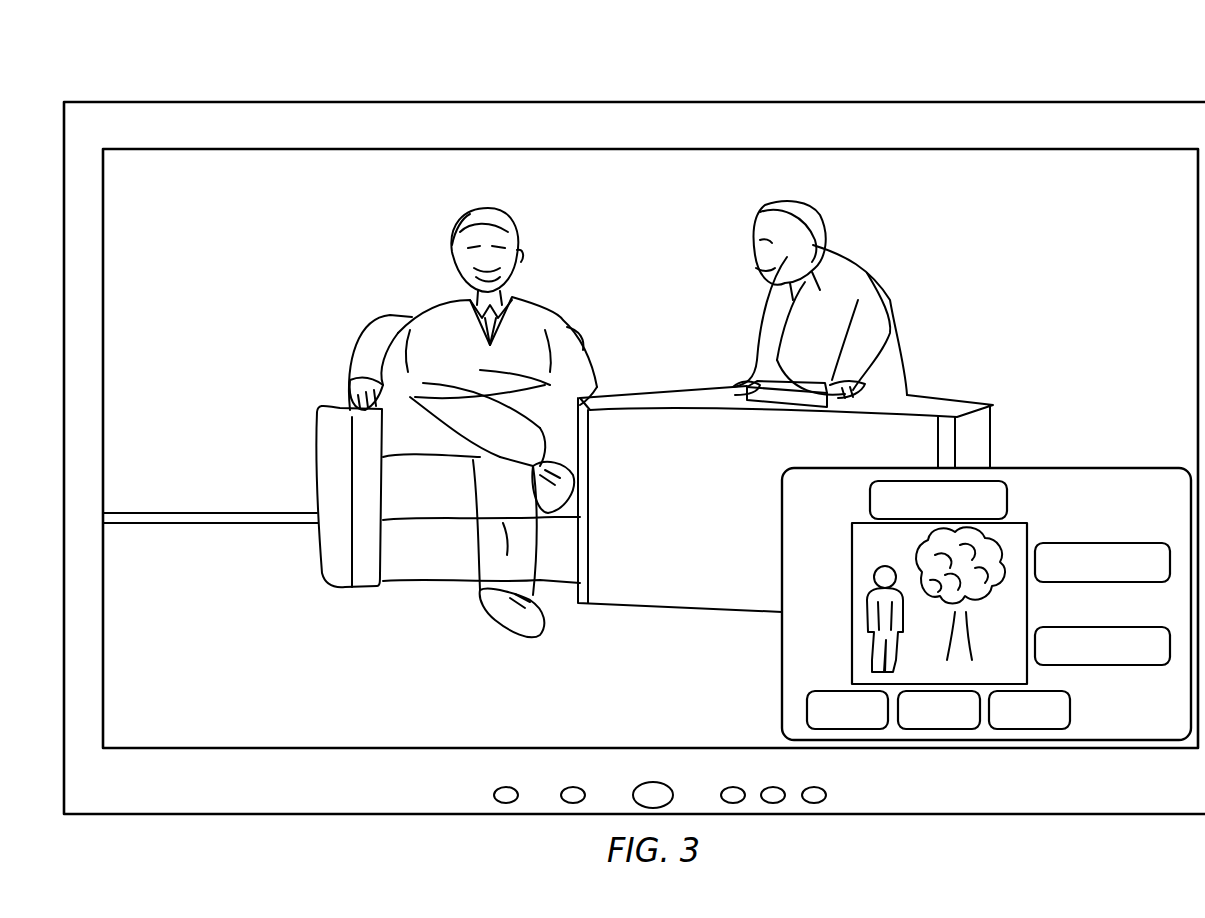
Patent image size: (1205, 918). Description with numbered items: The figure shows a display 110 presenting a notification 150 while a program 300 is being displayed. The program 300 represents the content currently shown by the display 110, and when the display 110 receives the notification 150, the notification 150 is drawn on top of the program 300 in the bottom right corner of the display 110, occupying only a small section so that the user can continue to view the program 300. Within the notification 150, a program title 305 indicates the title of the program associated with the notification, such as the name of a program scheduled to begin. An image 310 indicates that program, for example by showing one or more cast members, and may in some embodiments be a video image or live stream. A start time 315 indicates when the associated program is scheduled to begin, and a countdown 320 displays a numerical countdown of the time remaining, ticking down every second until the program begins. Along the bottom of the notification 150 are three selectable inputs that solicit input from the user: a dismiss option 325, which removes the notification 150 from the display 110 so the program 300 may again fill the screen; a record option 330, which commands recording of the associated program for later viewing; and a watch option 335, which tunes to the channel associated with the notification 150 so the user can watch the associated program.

The program 300 is at (156, 44).
The display 110 is at (891, 102).
The notification 150 is at (1085, 468).
The program title 305 is at (1010, 500).
The image 310 is at (851, 553).
The start time 315 is at (1115, 543).
The countdown 320 is at (1115, 627).
The dismiss option 325 is at (850, 730).
The record option 330 is at (940, 730).
The watch option 335 is at (1072, 712).